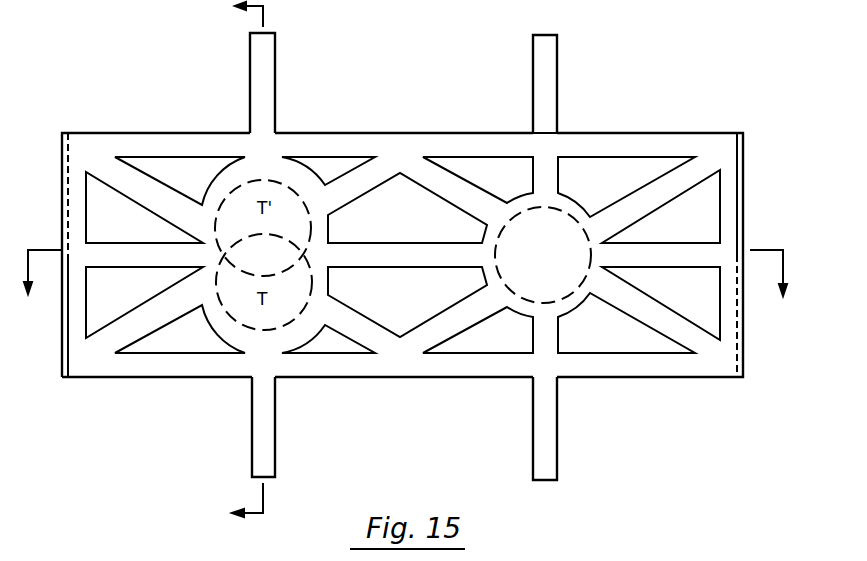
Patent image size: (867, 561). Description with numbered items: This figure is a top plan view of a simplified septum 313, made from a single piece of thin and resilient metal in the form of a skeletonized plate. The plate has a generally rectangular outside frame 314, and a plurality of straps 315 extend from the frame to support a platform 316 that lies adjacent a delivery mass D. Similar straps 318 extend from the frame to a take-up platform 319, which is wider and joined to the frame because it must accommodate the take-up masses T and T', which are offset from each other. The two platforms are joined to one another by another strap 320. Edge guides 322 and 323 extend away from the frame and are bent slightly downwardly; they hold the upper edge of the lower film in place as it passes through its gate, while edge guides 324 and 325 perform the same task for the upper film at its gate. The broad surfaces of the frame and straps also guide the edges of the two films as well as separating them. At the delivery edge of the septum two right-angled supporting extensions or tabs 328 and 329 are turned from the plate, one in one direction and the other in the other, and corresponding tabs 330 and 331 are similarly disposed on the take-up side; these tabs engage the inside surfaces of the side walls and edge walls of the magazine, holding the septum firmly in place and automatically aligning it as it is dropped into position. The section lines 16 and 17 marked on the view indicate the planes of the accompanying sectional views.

The septum 313 is at (693, 124).
The outside frame 314 is at (544, 144).
The straps 315 is at (534, 172).
The platform 316 is at (543, 255).
The straps 318 is at (132, 190).
The take-up platform 319 is at (245, 216).
The strap 320 is at (418, 251).
The edge guide 322 is at (546, 62).
The edge guide 323 is at (266, 62).
The edge guide 324 is at (548, 446).
The edge guide 325 is at (266, 446).
The supporting extension or tab 328 is at (745, 333).
The supporting extension or tab 329 is at (745, 187).
The supporting extension or tab 330 is at (47, 316).
The supporting extension or tab 331 is at (62, 187).
The section line 16- 16 is at (405, 263).
The section line 17- 17 is at (267, 259).